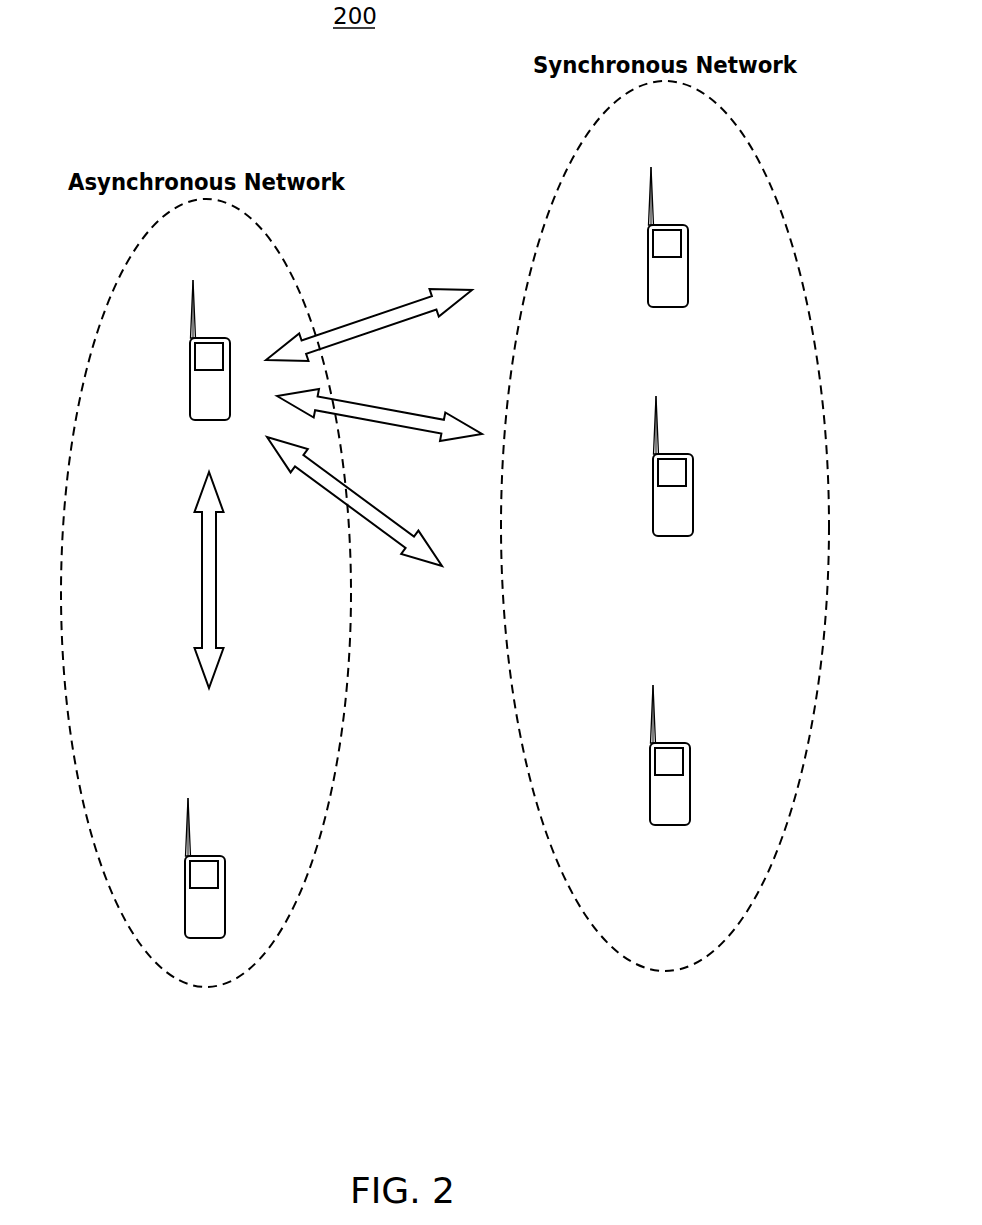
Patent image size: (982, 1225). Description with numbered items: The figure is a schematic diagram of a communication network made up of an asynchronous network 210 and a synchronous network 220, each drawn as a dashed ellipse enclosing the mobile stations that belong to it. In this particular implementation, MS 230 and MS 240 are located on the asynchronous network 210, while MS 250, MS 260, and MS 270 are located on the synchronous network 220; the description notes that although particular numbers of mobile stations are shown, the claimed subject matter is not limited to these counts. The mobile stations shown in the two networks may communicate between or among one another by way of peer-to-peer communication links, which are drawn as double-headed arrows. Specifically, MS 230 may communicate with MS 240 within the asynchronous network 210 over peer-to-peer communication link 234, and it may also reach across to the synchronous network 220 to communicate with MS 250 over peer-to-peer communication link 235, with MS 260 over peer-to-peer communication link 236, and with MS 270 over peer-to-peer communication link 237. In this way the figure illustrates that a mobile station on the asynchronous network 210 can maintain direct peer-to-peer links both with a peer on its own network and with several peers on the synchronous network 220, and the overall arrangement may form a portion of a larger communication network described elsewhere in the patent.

The asynchronous network 210 is at (206, 637).
The synchronous network 220 is at (665, 526).
The MS 230 is at (154, 362).
The peer-to-peer communication link 234 is at (157, 580).
The peer-to-peer communication link 235 is at (369, 294).
The peer-to-peer communication link 236 is at (379, 395).
The peer-to-peer communication link 237 is at (353, 508).
The MS 240 is at (149, 875).
The MS 250 is at (611, 255).
The MS 260 is at (617, 482).
The MS 270 is at (614, 755).